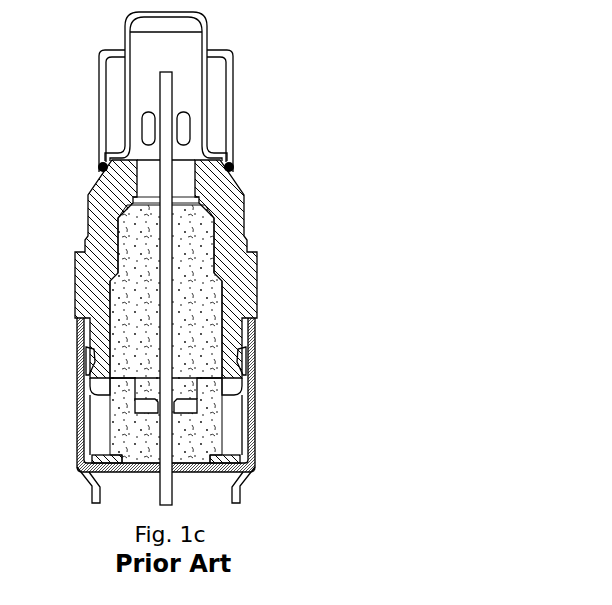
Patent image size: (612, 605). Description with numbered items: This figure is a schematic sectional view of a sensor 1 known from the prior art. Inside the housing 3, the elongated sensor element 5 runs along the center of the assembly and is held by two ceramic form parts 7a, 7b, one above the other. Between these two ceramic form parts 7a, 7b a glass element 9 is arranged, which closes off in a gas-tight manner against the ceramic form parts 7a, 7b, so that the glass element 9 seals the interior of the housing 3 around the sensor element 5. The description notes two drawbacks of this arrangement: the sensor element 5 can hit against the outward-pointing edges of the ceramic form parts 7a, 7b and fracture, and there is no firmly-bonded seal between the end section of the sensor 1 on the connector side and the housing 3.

The sensor 1 is at (285, 117).
The housing 3 is at (253, 175).
The sensor element 5 is at (170, 263).
The ceramic form part 7a is at (207, 325).
The ceramic form part 7b is at (195, 450).
The glass element 9 is at (190, 406).